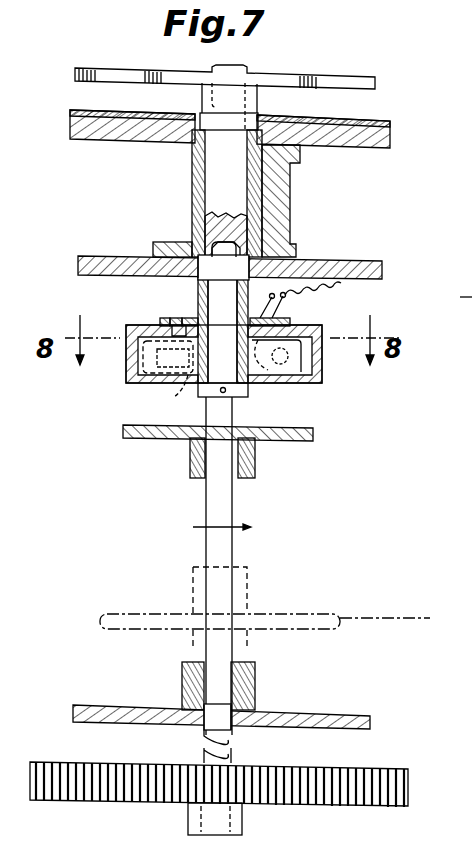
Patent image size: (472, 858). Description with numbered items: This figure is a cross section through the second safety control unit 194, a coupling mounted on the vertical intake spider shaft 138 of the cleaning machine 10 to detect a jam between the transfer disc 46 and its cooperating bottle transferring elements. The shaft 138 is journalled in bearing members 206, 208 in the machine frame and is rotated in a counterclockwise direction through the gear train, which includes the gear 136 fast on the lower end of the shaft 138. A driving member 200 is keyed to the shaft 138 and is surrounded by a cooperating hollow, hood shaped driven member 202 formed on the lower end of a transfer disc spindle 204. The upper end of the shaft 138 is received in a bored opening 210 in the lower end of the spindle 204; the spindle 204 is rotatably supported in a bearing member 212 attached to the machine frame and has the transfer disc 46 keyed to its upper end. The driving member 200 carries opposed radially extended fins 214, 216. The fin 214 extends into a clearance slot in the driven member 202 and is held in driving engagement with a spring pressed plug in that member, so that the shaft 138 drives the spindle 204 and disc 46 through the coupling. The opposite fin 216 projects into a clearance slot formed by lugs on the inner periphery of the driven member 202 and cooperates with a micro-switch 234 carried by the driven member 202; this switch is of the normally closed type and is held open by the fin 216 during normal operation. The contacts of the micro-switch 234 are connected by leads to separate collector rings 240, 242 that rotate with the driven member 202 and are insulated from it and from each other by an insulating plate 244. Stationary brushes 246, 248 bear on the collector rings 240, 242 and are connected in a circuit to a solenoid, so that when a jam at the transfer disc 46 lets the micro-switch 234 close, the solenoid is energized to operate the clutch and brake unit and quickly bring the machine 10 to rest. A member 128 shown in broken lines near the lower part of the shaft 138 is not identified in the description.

The transfer disc 46 is at (328, 72).
The second safety control unit 194 is at (403, 170).
The bearing member 212 is at (192, 190).
The transfer disc spindle 204 is at (235, 193).
The bored opening 210 is at (236, 242).
The collector ring 242 is at (188, 318).
The collector ring 240 is at (176, 318).
The insulating plate 244 is at (162, 320).
The stationary brush 246 is at (292, 322).
The stationary brush 248 is at (325, 296).
The driven member 202 is at (322, 376).
The radially extended fin 216 is at (172, 375).
The micro-switch 234 is at (190, 380).
The radially extended fin 214 is at (272, 366).
The driving member 200 is at (250, 380).
The bearing member 206 is at (255, 459).
The intake spider shaft 138 is at (238, 504).
The bar 128 is at (265, 608).
The bearing member 208 is at (257, 681).
The gear 136 is at (380, 765).
The cleaning machine 10 is at (451, 573).